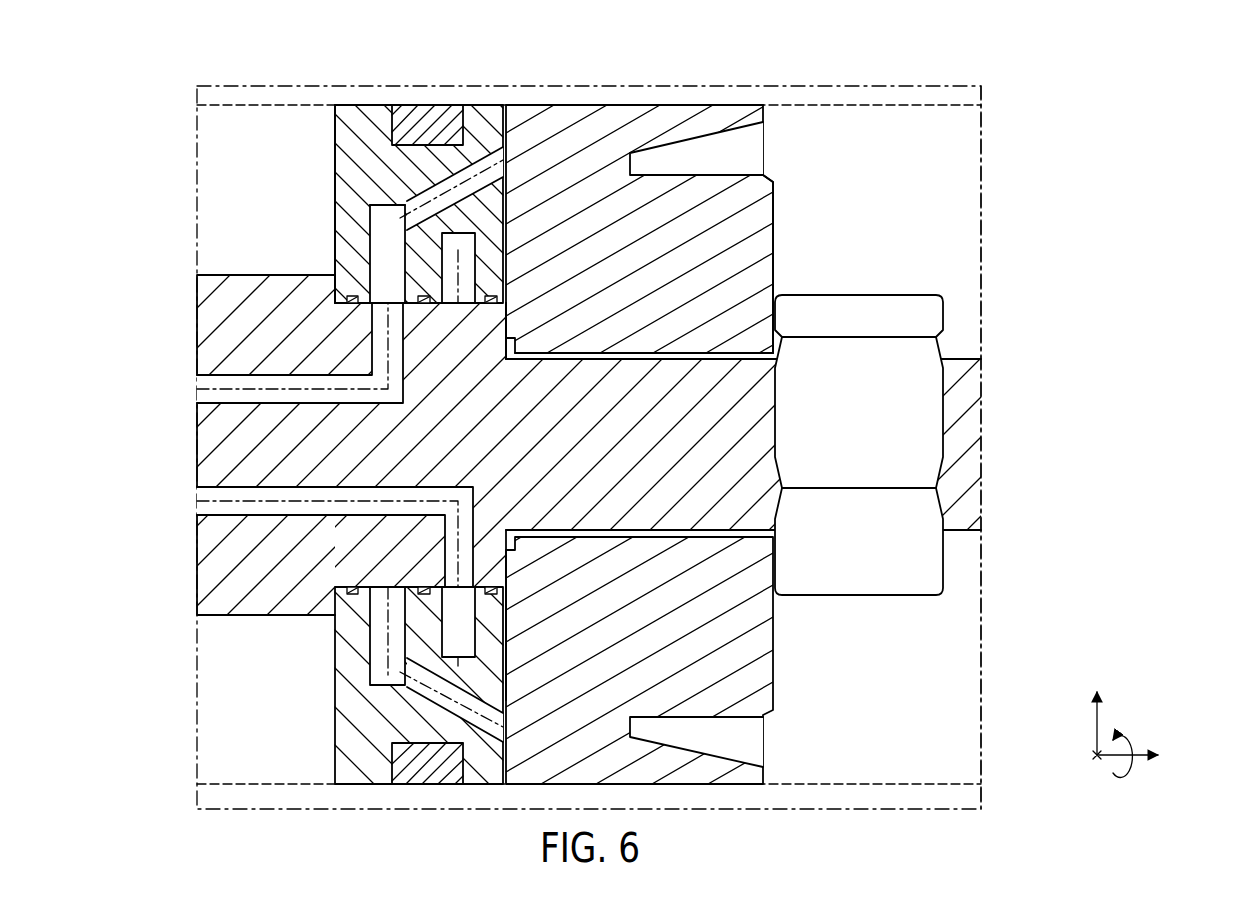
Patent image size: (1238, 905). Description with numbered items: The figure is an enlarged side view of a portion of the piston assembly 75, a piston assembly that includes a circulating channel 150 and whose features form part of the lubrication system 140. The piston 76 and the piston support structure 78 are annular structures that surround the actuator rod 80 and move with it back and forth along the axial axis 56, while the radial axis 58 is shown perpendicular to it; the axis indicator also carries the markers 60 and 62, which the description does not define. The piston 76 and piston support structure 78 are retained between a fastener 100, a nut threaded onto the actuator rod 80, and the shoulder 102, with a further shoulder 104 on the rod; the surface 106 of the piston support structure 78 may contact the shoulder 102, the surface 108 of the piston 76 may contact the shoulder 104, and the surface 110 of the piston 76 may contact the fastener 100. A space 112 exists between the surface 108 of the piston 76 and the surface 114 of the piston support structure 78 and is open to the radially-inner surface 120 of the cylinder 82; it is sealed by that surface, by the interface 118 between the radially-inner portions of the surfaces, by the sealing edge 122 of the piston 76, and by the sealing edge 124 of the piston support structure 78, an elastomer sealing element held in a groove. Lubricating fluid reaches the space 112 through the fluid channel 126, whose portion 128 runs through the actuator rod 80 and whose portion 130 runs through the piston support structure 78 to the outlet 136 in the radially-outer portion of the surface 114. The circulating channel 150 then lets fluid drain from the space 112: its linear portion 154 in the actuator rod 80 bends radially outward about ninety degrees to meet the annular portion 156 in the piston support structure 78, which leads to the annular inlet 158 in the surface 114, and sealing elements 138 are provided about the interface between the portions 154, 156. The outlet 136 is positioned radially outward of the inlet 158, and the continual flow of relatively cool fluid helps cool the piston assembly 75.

The axial axis 56 is at (1112, 758).
The radial axis 58 is at (1097, 722).
The center point 60 is at (1092, 755).
The circumferential direction 62 is at (1130, 737).
The piston assembly 75 is at (249, 146).
The piston 76 is at (732, 244).
The piston support structure 78 is at (345, 118).
The actuator rod 80 is at (203, 277).
The cylinder 82 is at (940, 86).
The fastener 100 is at (868, 302).
The shoulder 102 is at (335, 290).
The shoulder 104 is at (500, 328).
The surface 106 is at (335, 188).
The surface 108 is at (505, 320).
The surface 110 is at (773, 222).
The space 112 is at (505, 104).
The surface 114 is at (400, 228).
The interface 118 is at (507, 293).
The radially-inner surface 120 is at (975, 108).
The sealing edge 122 is at (676, 104).
The sealing edge 124 is at (404, 105).
The fluid channel 126 is at (276, 363).
The portion 128 is at (280, 380).
The portion 130 is at (385, 203).
The outlet 136 is at (487, 175).
The sealing elements 138 is at (352, 304).
The lubrication system 140 is at (176, 132).
The circulating channel 150 is at (203, 524).
The portion 154 is at (278, 522).
The portion 156 is at (497, 594).
The inlet 158 is at (507, 657).